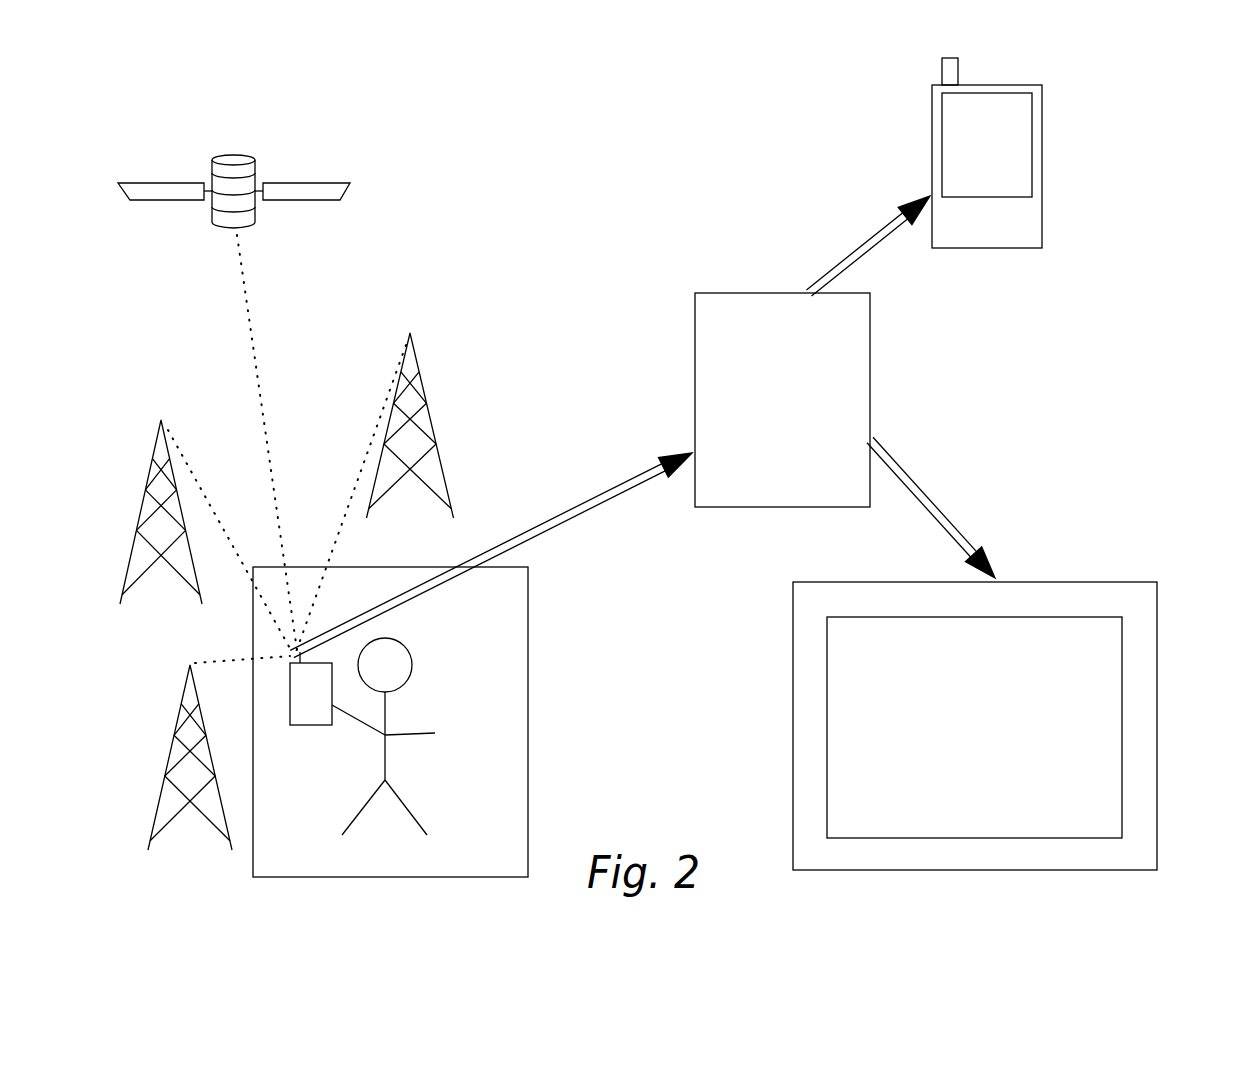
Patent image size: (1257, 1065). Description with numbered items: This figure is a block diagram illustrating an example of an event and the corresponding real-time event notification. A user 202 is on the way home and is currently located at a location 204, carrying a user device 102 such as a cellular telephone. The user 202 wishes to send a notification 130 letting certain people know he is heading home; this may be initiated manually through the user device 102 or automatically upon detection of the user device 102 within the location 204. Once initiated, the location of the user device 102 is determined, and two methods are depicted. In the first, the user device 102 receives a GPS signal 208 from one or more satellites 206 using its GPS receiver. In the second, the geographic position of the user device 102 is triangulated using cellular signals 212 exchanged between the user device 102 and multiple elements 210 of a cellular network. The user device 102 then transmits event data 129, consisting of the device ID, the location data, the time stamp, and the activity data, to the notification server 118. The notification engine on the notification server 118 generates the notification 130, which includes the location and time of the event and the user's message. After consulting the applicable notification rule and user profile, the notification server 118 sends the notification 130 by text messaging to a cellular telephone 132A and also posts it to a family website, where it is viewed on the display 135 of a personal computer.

The user device 102 is at (310, 713).
The notification server 118 is at (738, 350).
The event data 129 is at (622, 495).
The notification 130 is at (1038, 162).
The cellular telephone 132A is at (1033, 113).
The display 135 is at (793, 652).
The user 202 is at (418, 708).
The location 204 is at (526, 822).
The satellite 206 is at (307, 192).
The GPS signal 208 is at (252, 343).
The element of a cellular network 210 is at (145, 497).
The cellular signal 212 is at (211, 498).